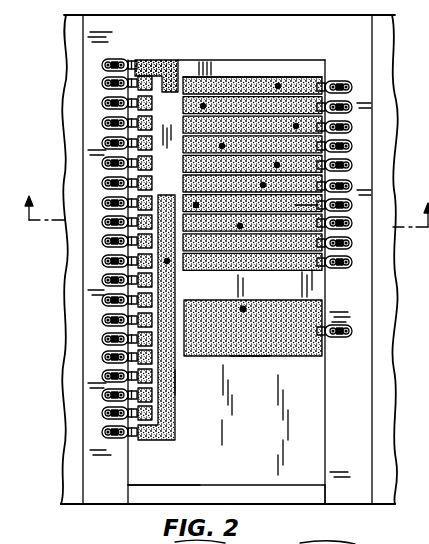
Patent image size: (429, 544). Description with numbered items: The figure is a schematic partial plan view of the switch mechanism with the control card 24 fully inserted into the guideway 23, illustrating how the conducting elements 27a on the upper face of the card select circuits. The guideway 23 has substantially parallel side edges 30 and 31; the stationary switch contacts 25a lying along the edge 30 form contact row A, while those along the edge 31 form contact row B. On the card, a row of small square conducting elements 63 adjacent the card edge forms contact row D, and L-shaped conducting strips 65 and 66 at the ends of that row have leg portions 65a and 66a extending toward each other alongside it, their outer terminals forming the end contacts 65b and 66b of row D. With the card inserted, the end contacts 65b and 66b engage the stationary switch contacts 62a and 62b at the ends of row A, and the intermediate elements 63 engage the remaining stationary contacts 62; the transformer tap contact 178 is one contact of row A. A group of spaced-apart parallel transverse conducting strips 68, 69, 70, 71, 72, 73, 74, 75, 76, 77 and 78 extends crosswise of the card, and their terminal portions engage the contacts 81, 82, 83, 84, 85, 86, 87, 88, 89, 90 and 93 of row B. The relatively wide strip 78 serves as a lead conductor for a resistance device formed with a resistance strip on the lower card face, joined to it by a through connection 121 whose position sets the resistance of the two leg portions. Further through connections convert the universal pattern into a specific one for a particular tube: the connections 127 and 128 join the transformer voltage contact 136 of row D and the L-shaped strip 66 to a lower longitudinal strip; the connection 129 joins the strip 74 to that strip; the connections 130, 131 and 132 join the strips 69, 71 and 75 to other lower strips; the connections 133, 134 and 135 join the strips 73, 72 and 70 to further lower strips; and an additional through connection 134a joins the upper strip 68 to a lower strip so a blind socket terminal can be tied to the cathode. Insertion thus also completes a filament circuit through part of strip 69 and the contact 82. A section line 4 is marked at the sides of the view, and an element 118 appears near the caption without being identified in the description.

The section line 4- 4 is at (227, 195).
The guideway 23 is at (170, 493).
The control card 24 is at (283, 466).
The switch contacts 25a is at (323, 61).
The conducting elements 27a is at (222, 78).
The side edge 30 is at (133, 497).
The side edge 31 is at (325, 493).
The stationary switch contacts 62 is at (103, 322).
The stationary switch contact 62a is at (140, 62).
The stationary switch contact 62b is at (132, 445).
The conducting elements 63 is at (148, 392).
The L-shaped conducting strip 65 is at (175, 71).
The leg portion 65a is at (170, 95).
The end contact 65b is at (148, 63).
The L-shaped conducting strip 66 is at (179, 337).
The leg portion 66a is at (177, 382).
The end contact 66b is at (149, 442).
The transverse conducting strip 68 is at (252, 85).
The transverse conducting strip 69 is at (252, 105).
The transverse conducting strip 70 is at (252, 124).
The transverse conducting strip 71 is at (252, 144).
The transverse conducting strip 72 is at (252, 163).
The transverse conducting strip 73 is at (252, 183).
The transverse conducting strip 74 is at (252, 203).
The transverse conducting strip 75 is at (252, 222).
The transverse conducting strip 76 is at (252, 242).
The transverse conducting strip 77 is at (252, 261).
The conducting strip 78 is at (250, 358).
The stationary switch contact 81 is at (333, 81).
The stationary switch contact 82 is at (349, 101).
The stationary switch contact 83 is at (350, 121).
The stationary switch contact 84 is at (350, 140).
The stationary switch contact 85 is at (350, 160).
The stationary switch contact 86 is at (350, 180).
The stationary switch contact 87 is at (349, 199).
The stationary switch contact 88 is at (350, 218).
The stationary switch contact 89 is at (352, 244).
The stationary switch contact 90 is at (352, 263).
The stationary switch contact 93 is at (319, 336).
The wire 118 is at (240, 543).
The through connection 121 is at (243, 308).
The through connection 127 is at (147, 258).
The through connection 128 is at (168, 263).
The through connection 129 is at (210, 204).
The through connection 130 is at (218, 106).
The through connection 131 is at (236, 145).
The through connection 132 is at (237, 226).
The through connection 133 is at (284, 185).
The through connection 134 is at (292, 165).
The additional through connection 134a is at (278, 83).
The through connection 135 is at (283, 126).
The transformer voltage contact 136 is at (177, 287).
The transformer tap contact 178 is at (104, 263).
The contact row A is at (101, 303).
The contact row B is at (299, 205).
The contact row D is at (148, 356).